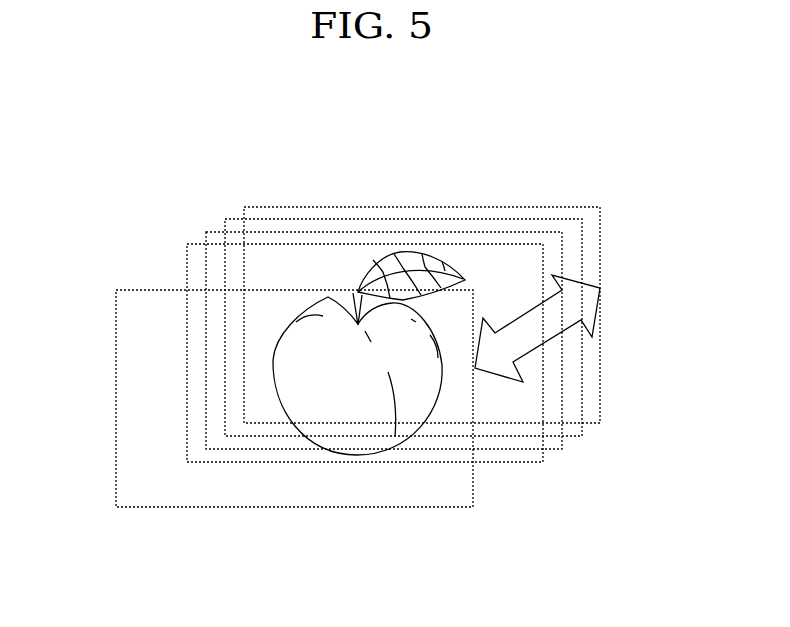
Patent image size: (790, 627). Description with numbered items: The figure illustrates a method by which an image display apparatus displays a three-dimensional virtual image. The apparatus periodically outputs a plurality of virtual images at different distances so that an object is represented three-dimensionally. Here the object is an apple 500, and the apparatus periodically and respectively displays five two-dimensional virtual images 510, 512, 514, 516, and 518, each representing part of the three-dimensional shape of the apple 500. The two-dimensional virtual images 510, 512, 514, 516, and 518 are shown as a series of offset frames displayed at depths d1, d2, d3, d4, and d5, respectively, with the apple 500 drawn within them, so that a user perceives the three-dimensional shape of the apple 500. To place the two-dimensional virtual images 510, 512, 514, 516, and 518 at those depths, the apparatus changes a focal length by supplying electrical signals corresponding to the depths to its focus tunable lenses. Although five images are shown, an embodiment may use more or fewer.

The apple 500 is at (407, 255).
The two-dimensional virtual image 510 is at (116, 309).
The two-dimensional virtual image 512 is at (187, 263).
The two-dimensional virtual image 514 is at (206, 232).
The two-dimensional virtual image 516 is at (225, 219).
The two-dimensional virtual image 518 is at (244, 207).